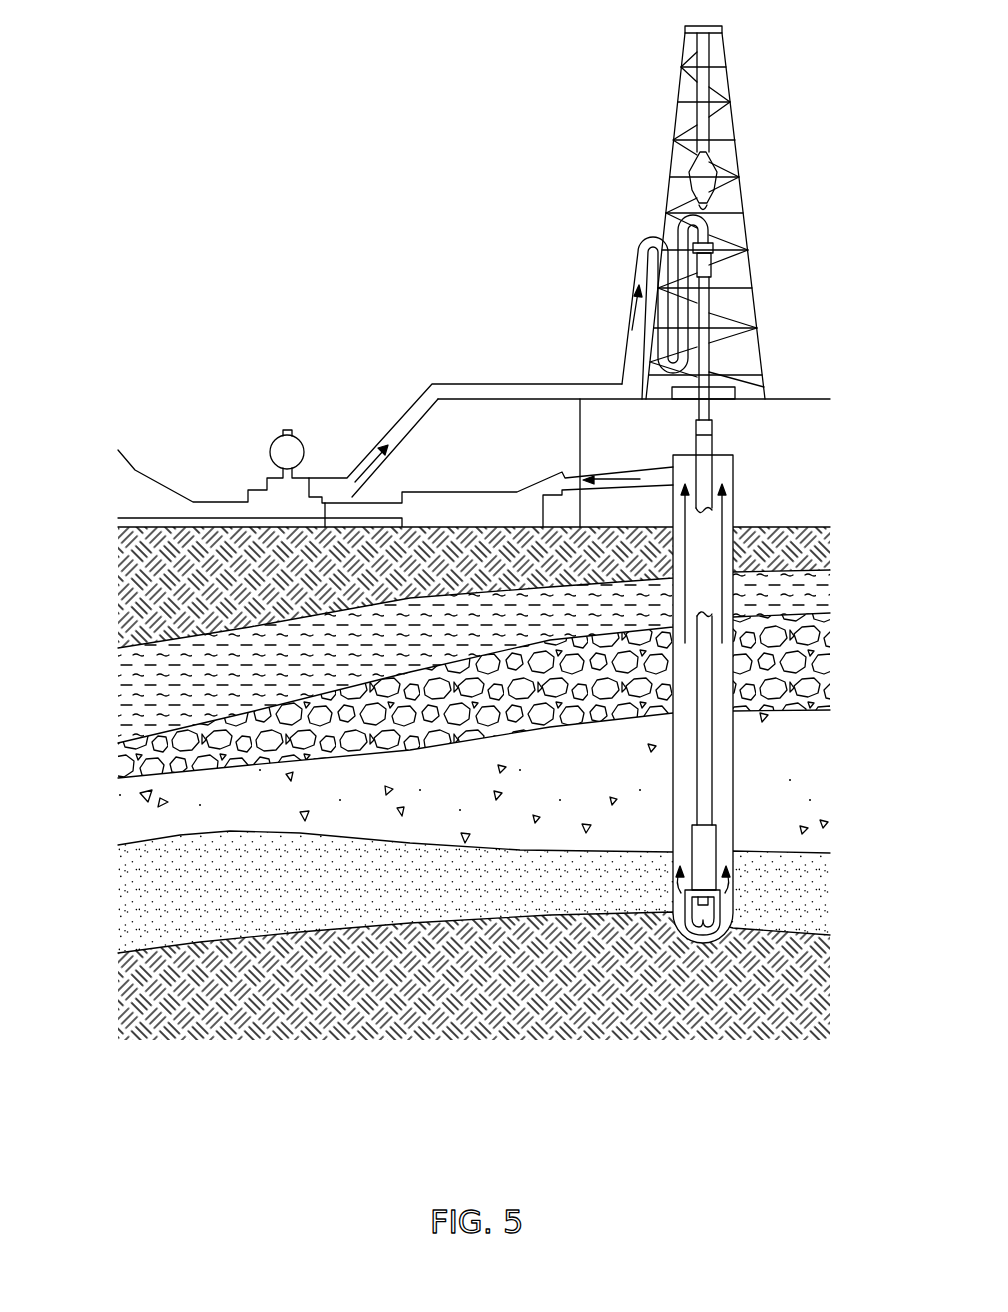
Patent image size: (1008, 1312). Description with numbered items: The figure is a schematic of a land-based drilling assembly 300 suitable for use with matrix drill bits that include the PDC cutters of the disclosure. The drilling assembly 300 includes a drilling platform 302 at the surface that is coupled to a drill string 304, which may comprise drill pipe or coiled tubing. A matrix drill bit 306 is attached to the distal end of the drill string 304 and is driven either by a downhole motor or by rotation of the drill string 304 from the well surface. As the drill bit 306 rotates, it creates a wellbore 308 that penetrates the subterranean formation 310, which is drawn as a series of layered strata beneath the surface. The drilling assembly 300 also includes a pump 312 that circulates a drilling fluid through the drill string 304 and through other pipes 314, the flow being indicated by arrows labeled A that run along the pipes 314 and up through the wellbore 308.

The drilling assembly 300 is at (546, 101).
The drilling platform 302 is at (783, 387).
The drill string 304 is at (712, 440).
The matrix drill bit 306 is at (718, 917).
The wellbore 308 is at (733, 815).
The subterranean formation 310 is at (95, 809).
The pump 312 is at (266, 483).
The pipes 314 is at (510, 385).